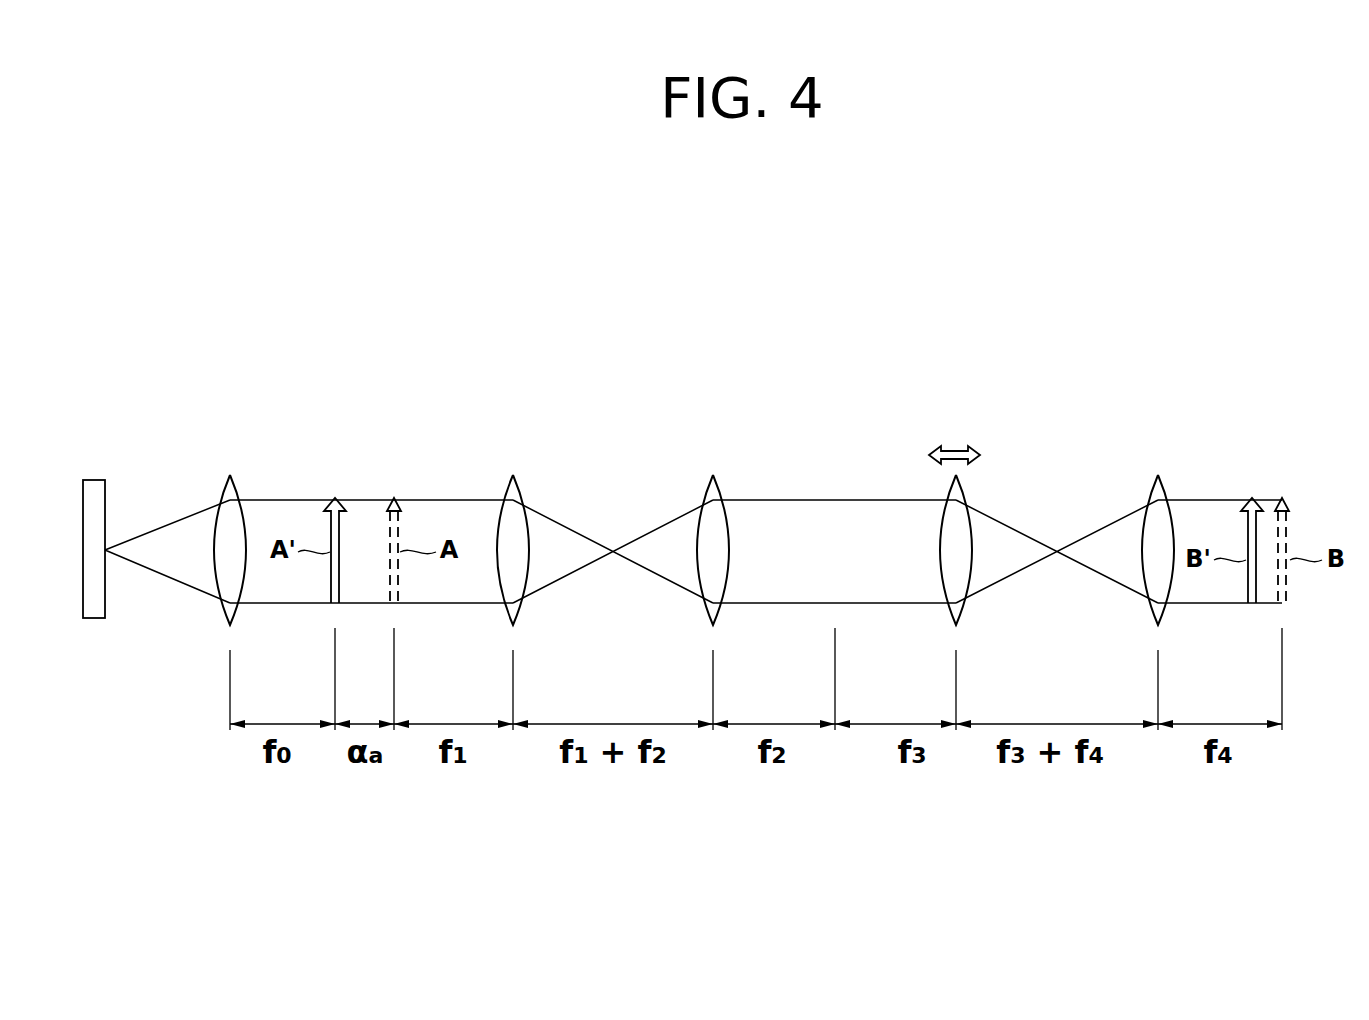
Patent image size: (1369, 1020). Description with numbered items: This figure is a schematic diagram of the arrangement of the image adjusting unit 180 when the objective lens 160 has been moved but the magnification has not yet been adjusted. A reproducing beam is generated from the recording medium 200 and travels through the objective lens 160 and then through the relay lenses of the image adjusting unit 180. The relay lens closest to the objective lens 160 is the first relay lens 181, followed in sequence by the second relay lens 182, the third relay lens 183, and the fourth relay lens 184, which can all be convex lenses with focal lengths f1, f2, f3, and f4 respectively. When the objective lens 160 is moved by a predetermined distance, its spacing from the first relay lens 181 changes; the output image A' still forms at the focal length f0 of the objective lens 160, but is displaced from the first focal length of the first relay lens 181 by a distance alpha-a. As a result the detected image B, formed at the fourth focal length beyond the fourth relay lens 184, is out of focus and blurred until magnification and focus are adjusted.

The recording medium 200 is at (93, 479).
The objective lens 160 is at (231, 474).
The image adjusting unit 180 is at (872, 328).
The first relay lens 181 is at (513, 474).
The second relay lens 182 is at (713, 474).
The third relay lens 183 is at (965, 494).
The fourth relay lens 184 is at (1158, 474).